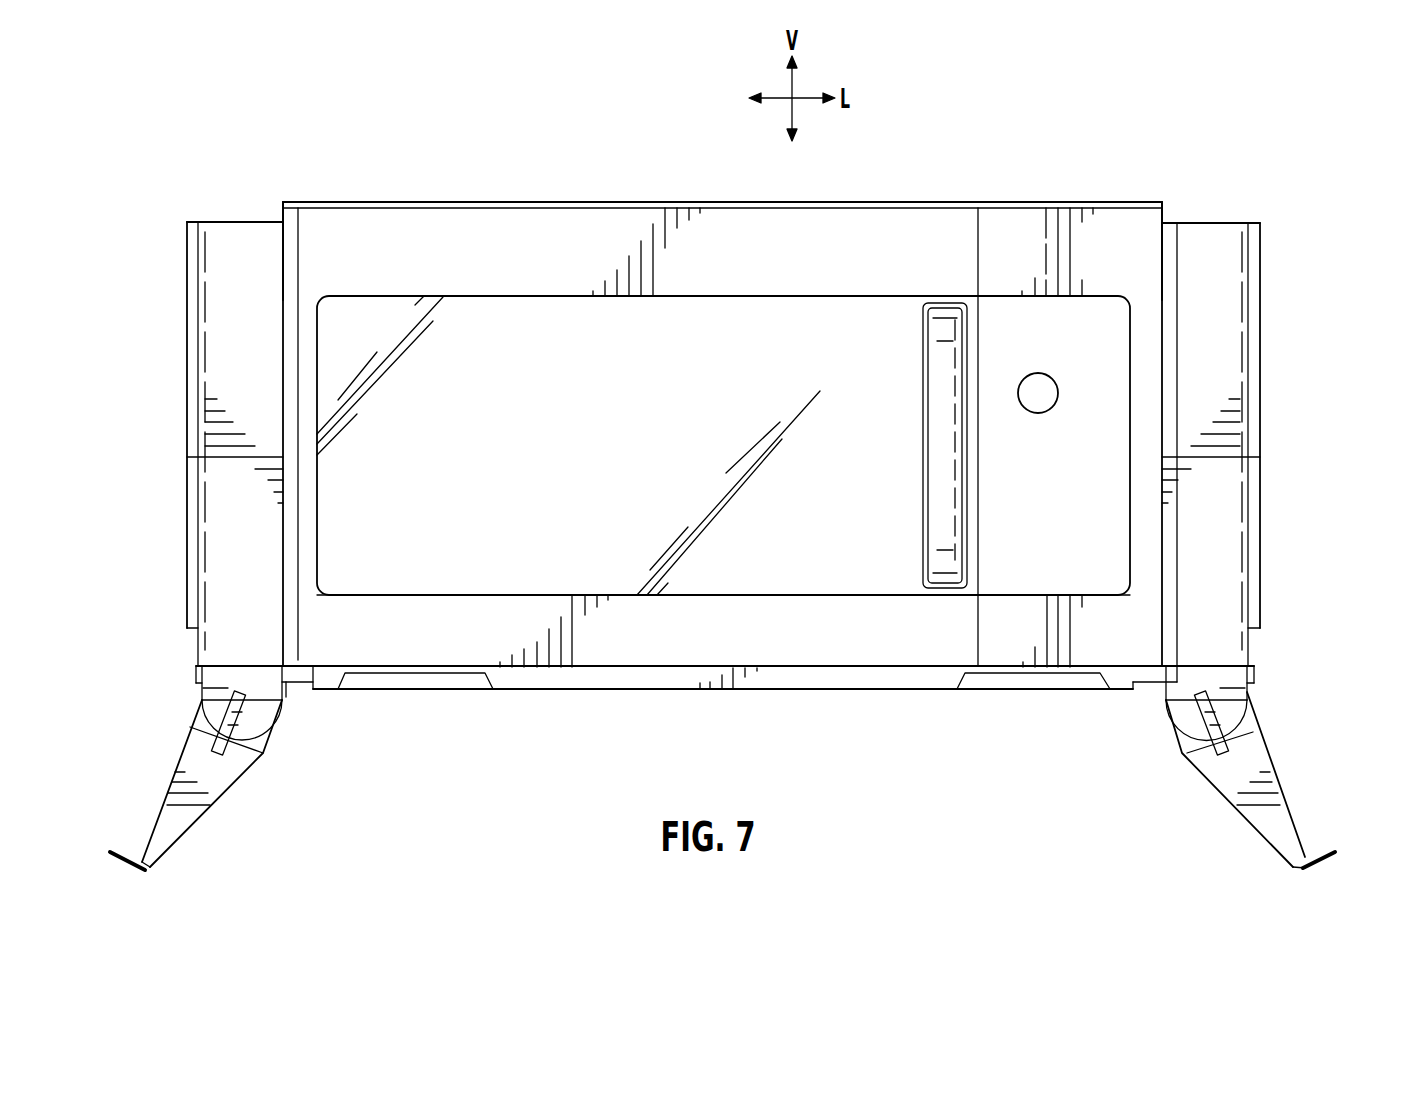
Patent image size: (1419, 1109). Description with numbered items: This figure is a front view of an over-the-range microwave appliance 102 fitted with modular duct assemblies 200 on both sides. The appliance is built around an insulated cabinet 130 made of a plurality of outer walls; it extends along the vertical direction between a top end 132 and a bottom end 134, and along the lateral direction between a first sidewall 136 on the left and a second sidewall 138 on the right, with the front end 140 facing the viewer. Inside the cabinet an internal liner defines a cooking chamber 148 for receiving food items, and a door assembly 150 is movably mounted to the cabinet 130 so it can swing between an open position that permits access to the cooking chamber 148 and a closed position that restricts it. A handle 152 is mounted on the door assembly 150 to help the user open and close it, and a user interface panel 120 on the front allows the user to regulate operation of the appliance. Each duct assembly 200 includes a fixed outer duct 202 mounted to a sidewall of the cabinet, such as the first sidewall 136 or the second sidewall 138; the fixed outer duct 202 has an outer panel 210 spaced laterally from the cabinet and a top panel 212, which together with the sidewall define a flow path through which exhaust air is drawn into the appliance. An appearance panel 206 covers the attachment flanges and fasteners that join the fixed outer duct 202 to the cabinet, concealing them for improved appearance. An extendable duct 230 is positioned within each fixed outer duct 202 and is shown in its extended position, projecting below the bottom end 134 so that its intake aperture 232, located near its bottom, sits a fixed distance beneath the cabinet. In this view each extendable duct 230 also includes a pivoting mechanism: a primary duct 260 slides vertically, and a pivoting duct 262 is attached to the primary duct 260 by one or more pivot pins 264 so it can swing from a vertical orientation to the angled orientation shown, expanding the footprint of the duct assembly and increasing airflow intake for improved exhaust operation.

The microwave appliance 102 is at (350, 100).
The user interface panel 120 is at (1100, 425).
The cabinet 130 is at (955, 190).
The top end 132 is at (606, 200).
The bottom end 134 is at (560, 677).
The first sidewall 136 is at (281, 202).
The second sidewall 138 is at (1165, 202).
The front end 140 is at (766, 644).
The cooking chamber 148 is at (460, 597).
The door assembly 150 is at (667, 630).
The handle 152 is at (917, 597).
The duct assembly 200 is at (1287, 462).
The fixed outer duct 202 is at (175, 366).
The appearance panel 206 is at (228, 497).
The outer panel 210 is at (187, 428).
The top panel 212 is at (220, 222).
The extendable duct 230 is at (168, 700).
The intake aperture 232 is at (1238, 830).
The primary duct 260 is at (1230, 680).
The pivoting duct 262 is at (1287, 800).
The pivot pin 264 is at (1260, 742).